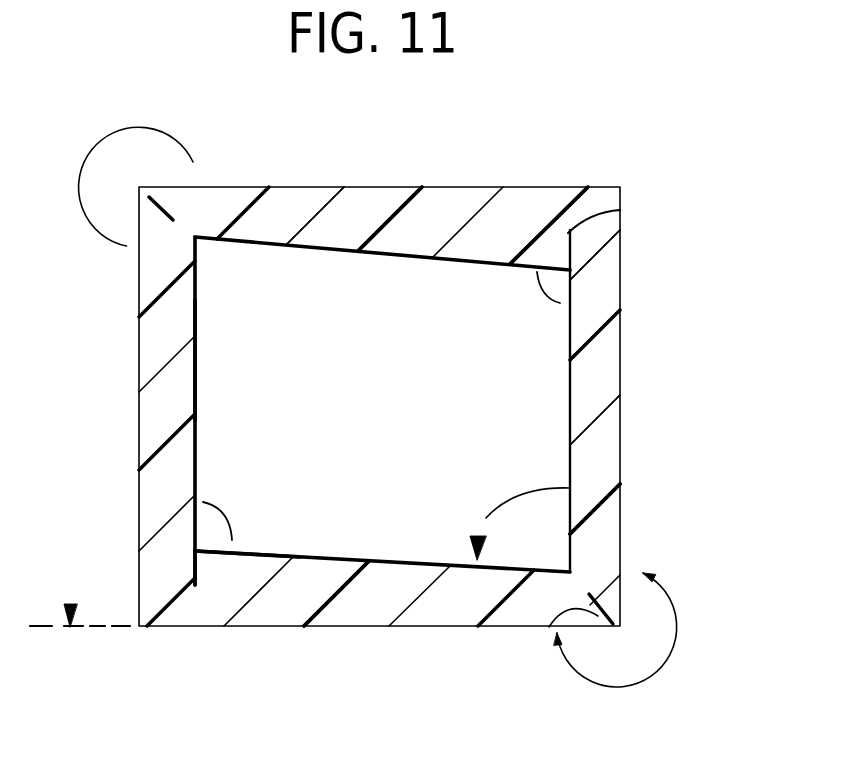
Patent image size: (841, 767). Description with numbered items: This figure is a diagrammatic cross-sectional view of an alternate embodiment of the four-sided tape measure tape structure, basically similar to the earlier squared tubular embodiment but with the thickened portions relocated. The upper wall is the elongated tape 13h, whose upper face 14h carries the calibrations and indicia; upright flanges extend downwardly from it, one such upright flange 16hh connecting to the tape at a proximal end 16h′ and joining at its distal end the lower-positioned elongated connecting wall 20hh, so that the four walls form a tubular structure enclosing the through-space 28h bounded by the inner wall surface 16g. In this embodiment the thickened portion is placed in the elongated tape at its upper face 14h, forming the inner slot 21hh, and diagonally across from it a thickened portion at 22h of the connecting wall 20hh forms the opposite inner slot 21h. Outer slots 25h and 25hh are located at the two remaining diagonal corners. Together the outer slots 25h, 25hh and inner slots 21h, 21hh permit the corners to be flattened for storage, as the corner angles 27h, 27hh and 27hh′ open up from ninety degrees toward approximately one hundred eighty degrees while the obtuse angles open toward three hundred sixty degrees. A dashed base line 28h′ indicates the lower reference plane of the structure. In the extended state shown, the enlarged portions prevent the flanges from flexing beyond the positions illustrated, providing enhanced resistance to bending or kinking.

The elongated tape 13h is at (353, 202).
The upper face of the elongated tape 14h is at (400, 187).
The inner portion of the tubular structure 16g is at (180, 378).
The proximal end of upright flange 16h′ is at (590, 267).
The upright flange 16hh is at (600, 387).
The elongated connecting wall 20hh is at (378, 610).
The inner slot 21h is at (198, 572).
The inner slot 21hh is at (620, 210).
The thickened portion of the connecting wall 22h is at (279, 522).
The outer slot 25h is at (160, 210).
The outer slot 25hh is at (553, 627).
The angle 27h is at (478, 550).
The angle 27hh is at (546, 299).
The angle 27hh′ is at (222, 522).
The through-space 28h is at (297, 407).
The base reference line 28h′ is at (140, 558).